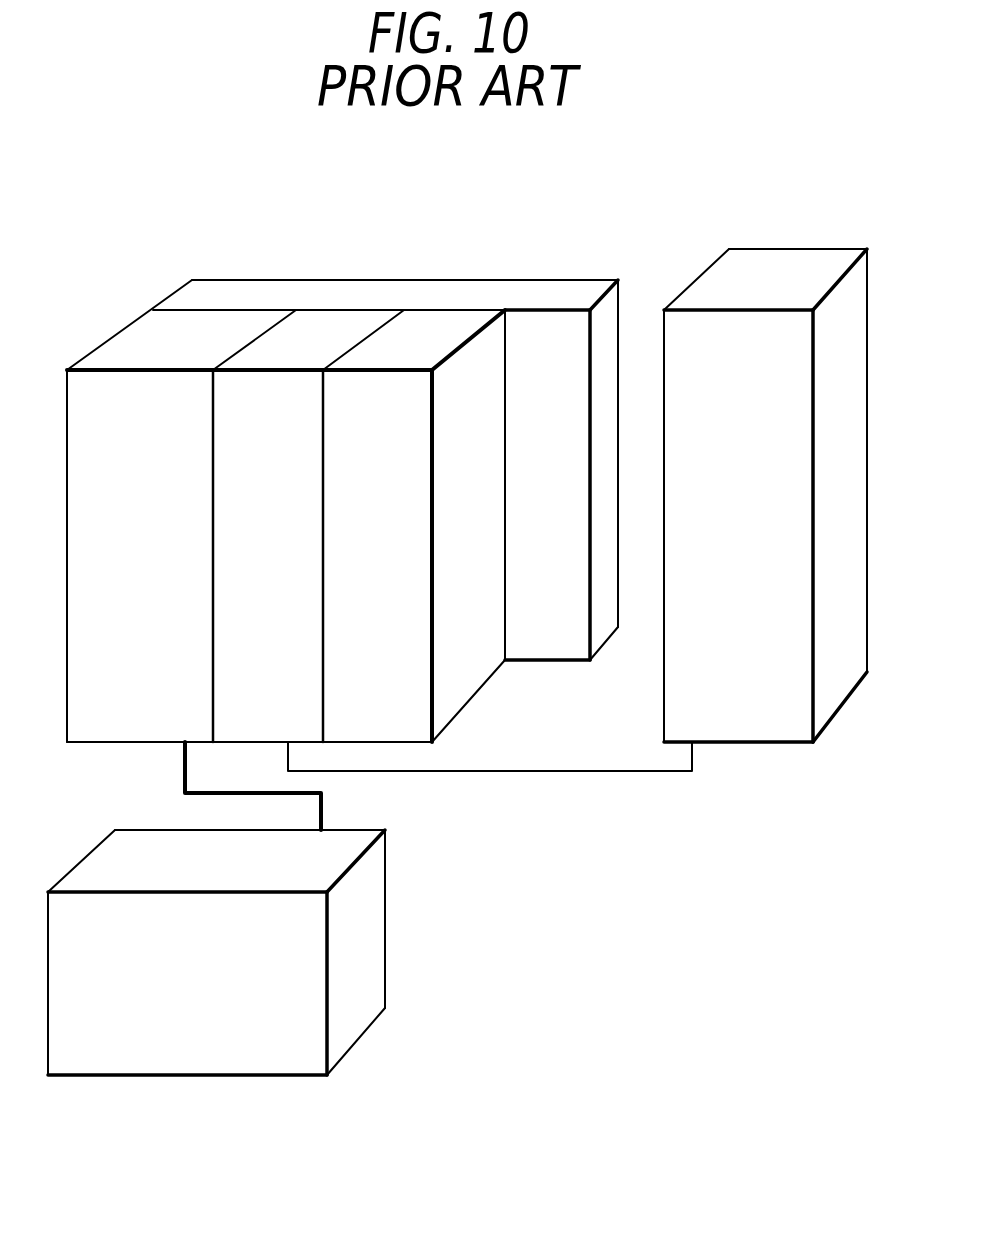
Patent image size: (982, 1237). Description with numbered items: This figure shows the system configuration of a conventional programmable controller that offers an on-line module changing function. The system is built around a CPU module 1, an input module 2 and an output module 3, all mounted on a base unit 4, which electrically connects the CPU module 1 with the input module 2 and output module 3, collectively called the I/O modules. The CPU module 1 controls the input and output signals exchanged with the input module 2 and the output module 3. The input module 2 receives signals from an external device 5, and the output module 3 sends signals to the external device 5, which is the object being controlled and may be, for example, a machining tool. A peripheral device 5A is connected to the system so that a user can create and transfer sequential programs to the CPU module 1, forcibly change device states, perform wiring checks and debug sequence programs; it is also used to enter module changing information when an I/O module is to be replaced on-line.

The CPU module 1 is at (181, 478).
The input module 2 is at (308, 450).
The output module 3 is at (414, 454).
The base unit 4 is at (525, 465).
The external device 5 is at (765, 438).
The peripheral device 5A is at (216, 997).